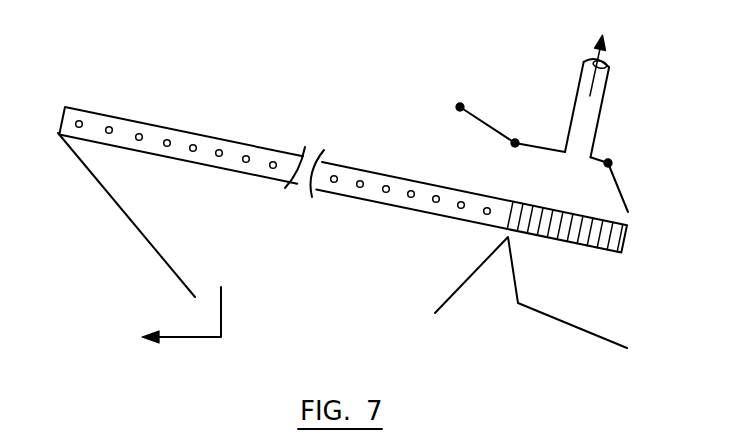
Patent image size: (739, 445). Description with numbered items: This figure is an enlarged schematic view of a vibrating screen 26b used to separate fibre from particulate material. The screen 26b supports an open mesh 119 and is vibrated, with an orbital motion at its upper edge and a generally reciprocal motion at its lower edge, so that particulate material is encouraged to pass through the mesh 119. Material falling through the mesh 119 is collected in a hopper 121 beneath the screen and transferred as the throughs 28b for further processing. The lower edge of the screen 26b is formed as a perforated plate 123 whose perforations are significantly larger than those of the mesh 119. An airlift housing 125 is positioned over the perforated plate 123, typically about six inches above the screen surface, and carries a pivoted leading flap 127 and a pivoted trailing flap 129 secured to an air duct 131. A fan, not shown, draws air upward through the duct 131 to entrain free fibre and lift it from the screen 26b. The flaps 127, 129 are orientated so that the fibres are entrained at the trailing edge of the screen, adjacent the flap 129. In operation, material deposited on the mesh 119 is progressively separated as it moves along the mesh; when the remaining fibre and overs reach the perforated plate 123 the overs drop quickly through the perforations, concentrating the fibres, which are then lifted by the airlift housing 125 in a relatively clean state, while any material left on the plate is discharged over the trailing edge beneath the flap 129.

The screen 26b is at (137, 112).
The open mesh 119 is at (168, 147).
The hopper 121 is at (172, 268).
The throughs 28b is at (158, 319).
The perforated plate 123 is at (569, 229).
The airlift housing 125 is at (602, 142).
The pivoted leading flap 127 is at (491, 126).
The pivoted trailing flap 129 is at (619, 187).
The air duct 131 is at (605, 93).